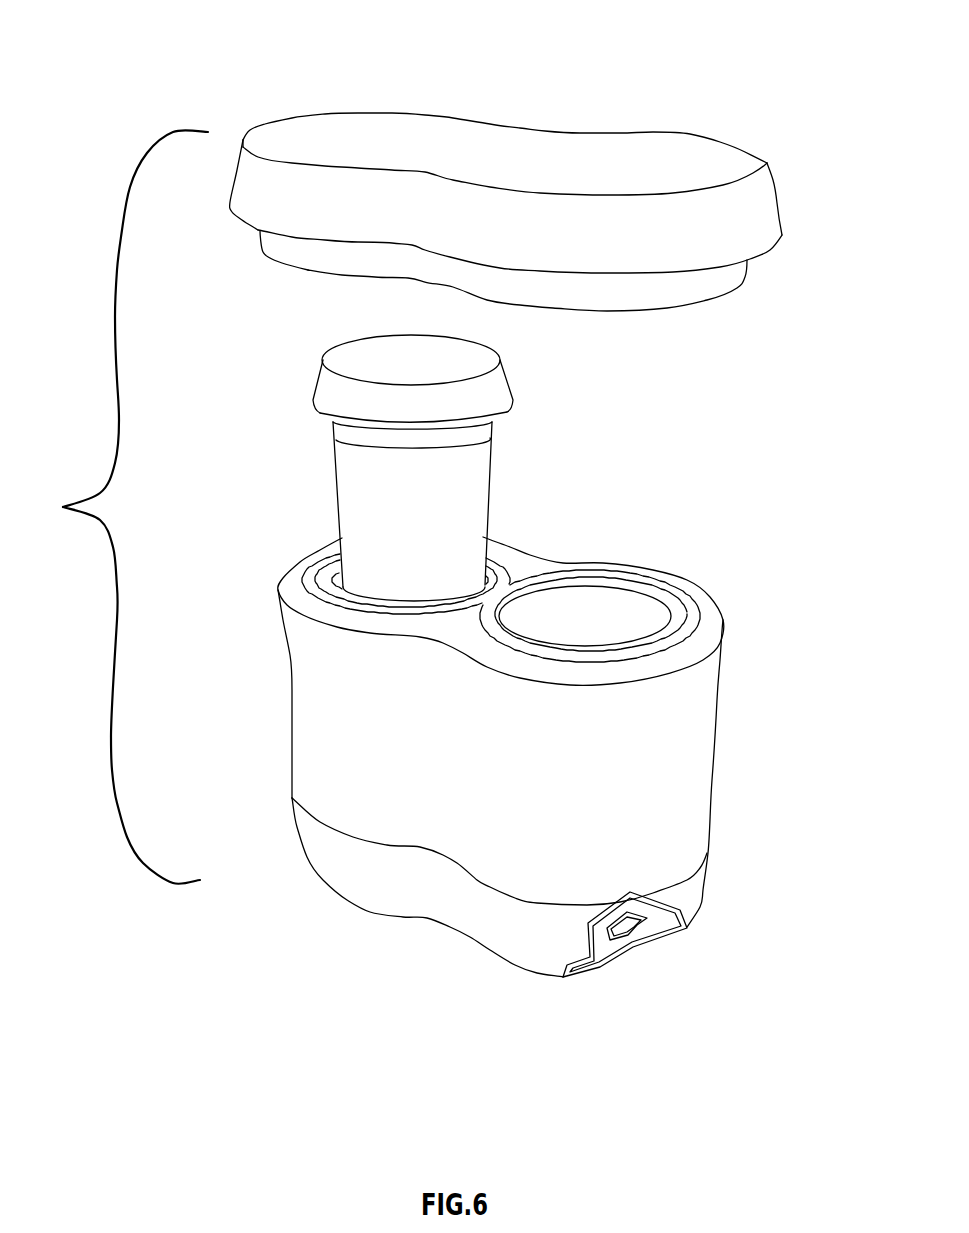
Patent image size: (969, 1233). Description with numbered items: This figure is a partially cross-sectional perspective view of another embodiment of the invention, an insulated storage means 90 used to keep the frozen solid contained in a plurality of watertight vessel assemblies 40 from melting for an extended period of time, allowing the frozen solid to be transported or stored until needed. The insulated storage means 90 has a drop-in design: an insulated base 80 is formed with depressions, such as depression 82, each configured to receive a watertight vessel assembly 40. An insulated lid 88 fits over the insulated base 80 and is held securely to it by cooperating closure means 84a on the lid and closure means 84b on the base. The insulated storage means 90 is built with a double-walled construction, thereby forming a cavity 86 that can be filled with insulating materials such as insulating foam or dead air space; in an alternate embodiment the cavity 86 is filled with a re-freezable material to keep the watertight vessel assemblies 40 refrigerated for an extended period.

The insulated storage means 90 is at (110, 507).
The insulated lid 88 is at (663, 162).
The closure means 84a is at (663, 310).
The water-tight vessel assembly 40 is at (368, 505).
The insulated base 80 is at (682, 755).
The closure means 84b is at (650, 647).
The depression 82 is at (590, 622).
The cavity 86 is at (622, 942).